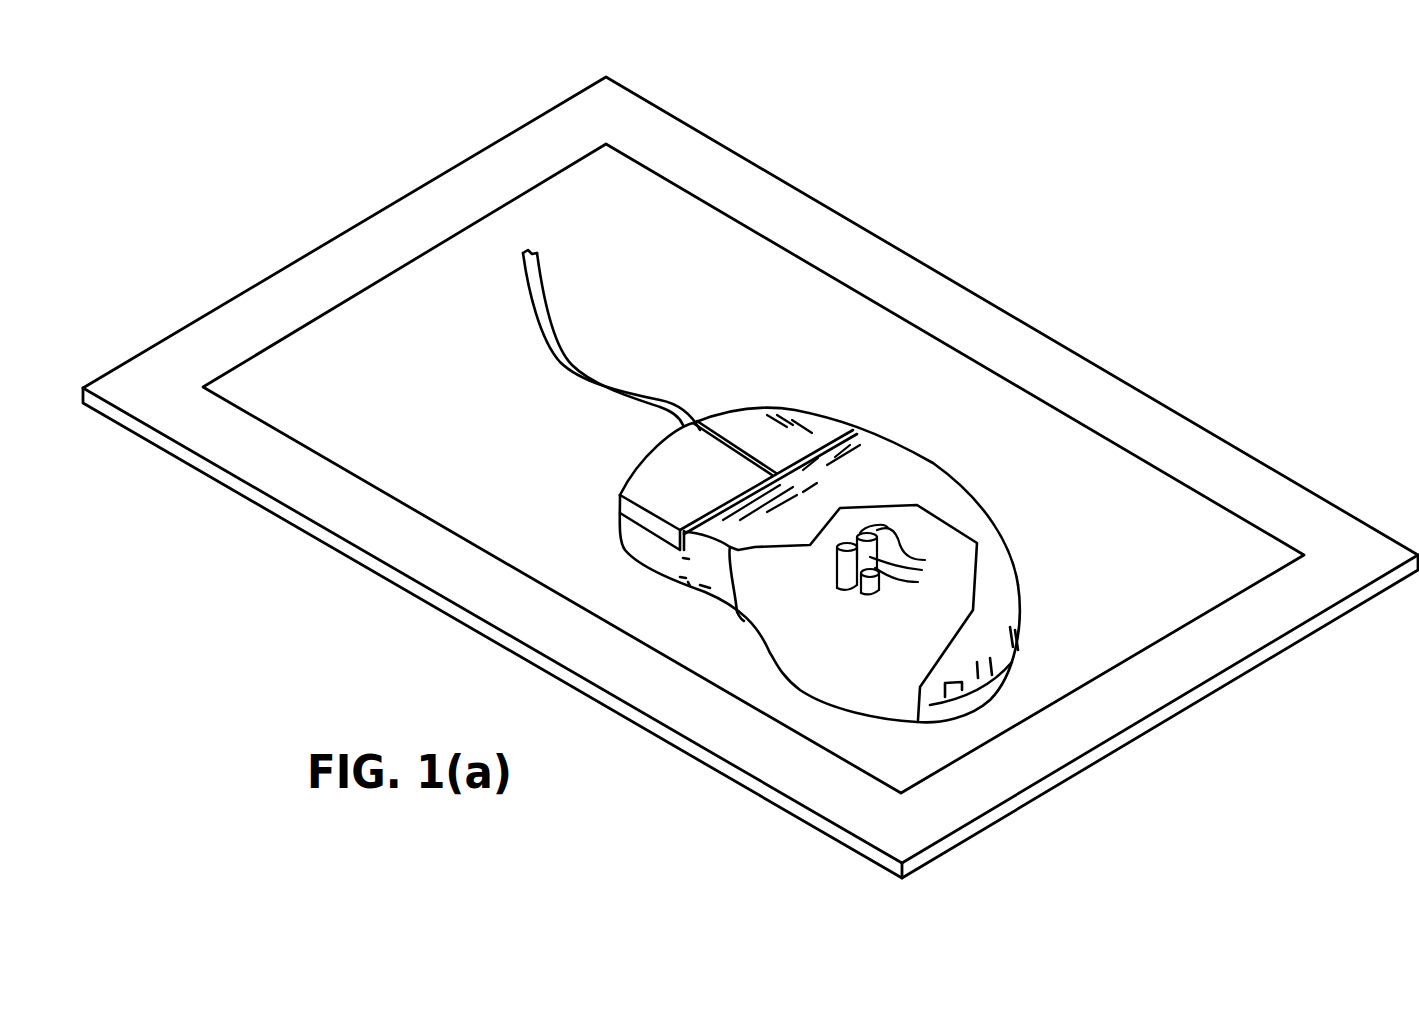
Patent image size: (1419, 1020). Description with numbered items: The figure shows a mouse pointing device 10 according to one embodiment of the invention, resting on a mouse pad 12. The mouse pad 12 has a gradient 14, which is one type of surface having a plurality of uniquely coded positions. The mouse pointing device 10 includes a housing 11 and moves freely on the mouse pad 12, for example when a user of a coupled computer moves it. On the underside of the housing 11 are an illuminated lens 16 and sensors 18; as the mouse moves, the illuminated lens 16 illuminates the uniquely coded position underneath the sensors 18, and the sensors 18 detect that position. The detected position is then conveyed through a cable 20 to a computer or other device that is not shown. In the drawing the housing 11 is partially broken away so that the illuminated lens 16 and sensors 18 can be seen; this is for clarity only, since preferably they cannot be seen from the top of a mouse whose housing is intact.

The mouse pointing device 10 is at (972, 457).
The housing 11 is at (895, 462).
The mouse pad 12 is at (1140, 688).
The gradient 14 is at (322, 362).
The illuminated lens 16 is at (870, 597).
The sensors 18 is at (845, 590).
The cable 20 is at (545, 293).